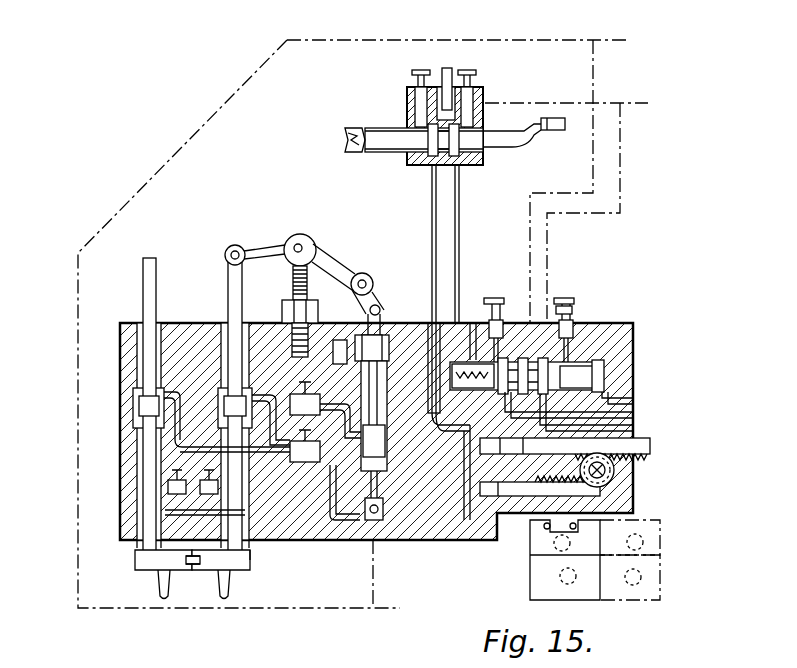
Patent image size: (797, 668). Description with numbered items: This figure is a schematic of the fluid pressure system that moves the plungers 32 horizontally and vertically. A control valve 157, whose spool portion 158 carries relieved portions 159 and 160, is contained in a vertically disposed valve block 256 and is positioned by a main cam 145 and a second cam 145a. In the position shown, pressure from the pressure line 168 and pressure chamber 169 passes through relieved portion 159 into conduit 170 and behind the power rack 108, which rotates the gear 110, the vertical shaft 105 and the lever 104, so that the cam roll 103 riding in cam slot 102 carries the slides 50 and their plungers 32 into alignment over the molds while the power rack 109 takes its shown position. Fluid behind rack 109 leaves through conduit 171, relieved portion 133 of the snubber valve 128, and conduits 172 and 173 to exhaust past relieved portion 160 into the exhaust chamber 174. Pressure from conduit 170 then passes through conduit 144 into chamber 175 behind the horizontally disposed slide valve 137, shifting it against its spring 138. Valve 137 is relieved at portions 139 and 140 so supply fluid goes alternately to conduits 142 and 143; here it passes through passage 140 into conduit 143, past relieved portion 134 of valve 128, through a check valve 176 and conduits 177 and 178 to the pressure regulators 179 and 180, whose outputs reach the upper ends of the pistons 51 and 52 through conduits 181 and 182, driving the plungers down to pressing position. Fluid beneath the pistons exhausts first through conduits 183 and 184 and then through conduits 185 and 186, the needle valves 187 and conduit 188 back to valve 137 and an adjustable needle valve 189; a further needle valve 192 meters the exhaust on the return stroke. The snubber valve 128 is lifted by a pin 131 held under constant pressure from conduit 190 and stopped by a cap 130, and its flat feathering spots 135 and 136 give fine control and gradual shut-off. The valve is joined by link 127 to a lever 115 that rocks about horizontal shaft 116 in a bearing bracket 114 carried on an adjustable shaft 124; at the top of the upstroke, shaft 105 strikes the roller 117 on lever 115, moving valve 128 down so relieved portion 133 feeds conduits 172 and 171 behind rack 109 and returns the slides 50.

The plunger 32 is at (163, 598).
The slide 50 is at (200, 572).
The piston 51 is at (140, 404).
The piston 52 is at (220, 395).
The cam slot 102 is at (545, 556).
The cam roll 103 is at (515, 500).
The lever 104 is at (540, 490).
The vertical shaft 105 is at (228, 275).
The power rack 108 is at (652, 446).
The power rack 109 is at (605, 490).
The gear 110 is at (612, 472).
The bearing bracket 114 is at (302, 236).
The lever 115 is at (268, 247).
The horizontal shaft 116 is at (319, 256).
The roller 117 is at (241, 246).
The shaft 124 is at (293, 290).
The link 127 is at (372, 276).
The snubber valve 128 is at (383, 300).
The cap 130 is at (356, 312).
The pin 131 is at (374, 505).
The relieved portion 133 is at (389, 340).
The relieved portion 134 is at (371, 420).
The feathering spot 135 is at (308, 335).
The feathering spot 136 is at (285, 320).
The slide valve 137 is at (630, 340).
The spring 138 is at (468, 345).
The relieved portion 139 is at (515, 355).
The relieved portion 140 is at (574, 340).
The conduit 142 is at (633, 418).
The conduit 143 is at (633, 396).
The conduit 144 is at (540, 290).
The main cam 145 is at (560, 126).
The cam 145a is at (345, 140).
The control valve 157 is at (508, 152).
The spool portion 158 is at (410, 137).
The relieved portion 159 is at (418, 158).
The relieved portion 160 is at (460, 152).
The pressure line 168 is at (541, 40).
The pressure chamber 169 is at (448, 95).
The conduit 170 is at (431, 203).
The conduit 171 is at (458, 520).
The conduit 172 is at (388, 348).
The conduit 173 is at (460, 203).
The exhaust chamber 174 is at (488, 97).
The chamber 175 is at (600, 372).
The check valve 176 is at (335, 500).
The conduit 177 is at (300, 395).
The conduit 178 is at (303, 463).
The pressure regulator 179 is at (300, 403).
The pressure regulator 180 is at (218, 410).
The conduit 181 is at (150, 385).
The conduit 182 is at (235, 453).
The conduit 183 is at (258, 560).
The conduit 184 is at (170, 512).
The conduit 185 is at (195, 521).
The conduit 186 is at (185, 552).
The needle valve 187 is at (205, 470).
The conduit 188 is at (550, 250).
The adjustable needle valve 189 is at (478, 305).
The conduit 190 is at (93, 605).
The needle valve 192 is at (572, 310).
The valve block 256 is at (410, 112).